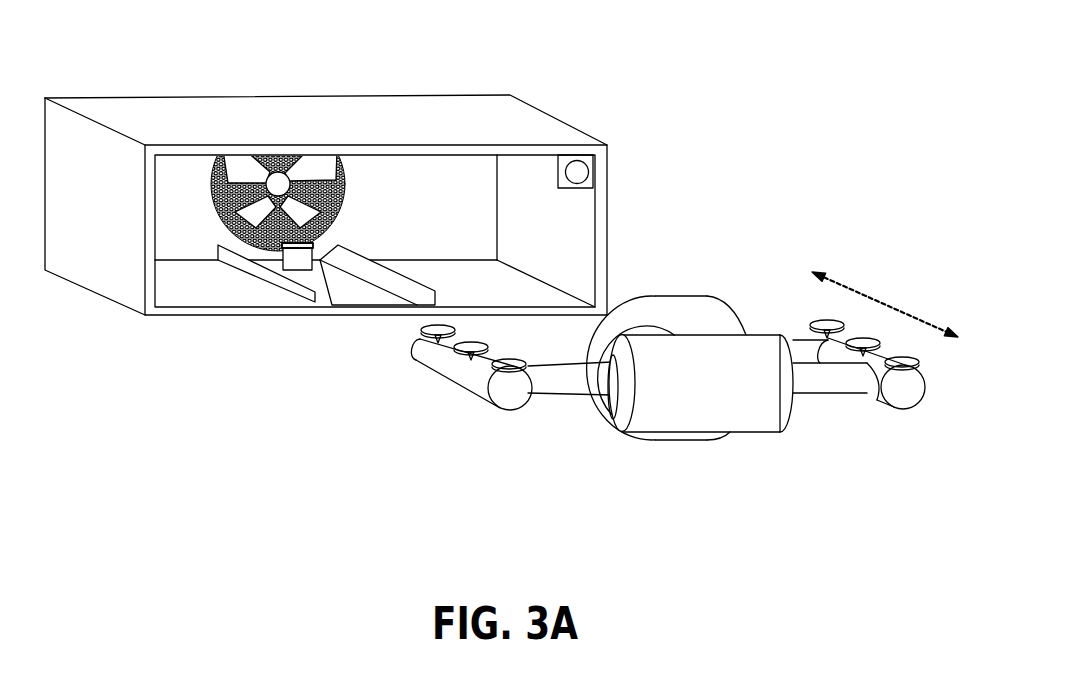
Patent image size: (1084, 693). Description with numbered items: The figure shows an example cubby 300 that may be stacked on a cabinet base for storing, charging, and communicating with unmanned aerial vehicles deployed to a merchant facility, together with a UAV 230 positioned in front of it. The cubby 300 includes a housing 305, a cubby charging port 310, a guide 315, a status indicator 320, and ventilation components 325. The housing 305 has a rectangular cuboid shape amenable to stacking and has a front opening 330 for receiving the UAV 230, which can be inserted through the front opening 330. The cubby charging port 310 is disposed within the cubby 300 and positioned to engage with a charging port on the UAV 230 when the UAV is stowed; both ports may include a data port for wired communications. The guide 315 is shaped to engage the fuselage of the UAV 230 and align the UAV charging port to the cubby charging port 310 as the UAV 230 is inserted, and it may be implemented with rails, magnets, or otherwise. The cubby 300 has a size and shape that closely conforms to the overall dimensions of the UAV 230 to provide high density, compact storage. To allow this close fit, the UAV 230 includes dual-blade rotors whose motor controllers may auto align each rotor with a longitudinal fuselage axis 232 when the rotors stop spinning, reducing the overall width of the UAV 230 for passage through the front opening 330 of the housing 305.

The cubby 300 is at (586, 49).
The housing 305 is at (166, 133).
The cubby charging port 310 is at (296, 259).
The guide 315 is at (363, 318).
The status indicator 320 is at (588, 168).
The ventilation components 325 is at (313, 170).
The front opening 330 is at (590, 238).
The UAV 230 is at (674, 441).
The longitudinal fuselage axis 232 is at (852, 287).